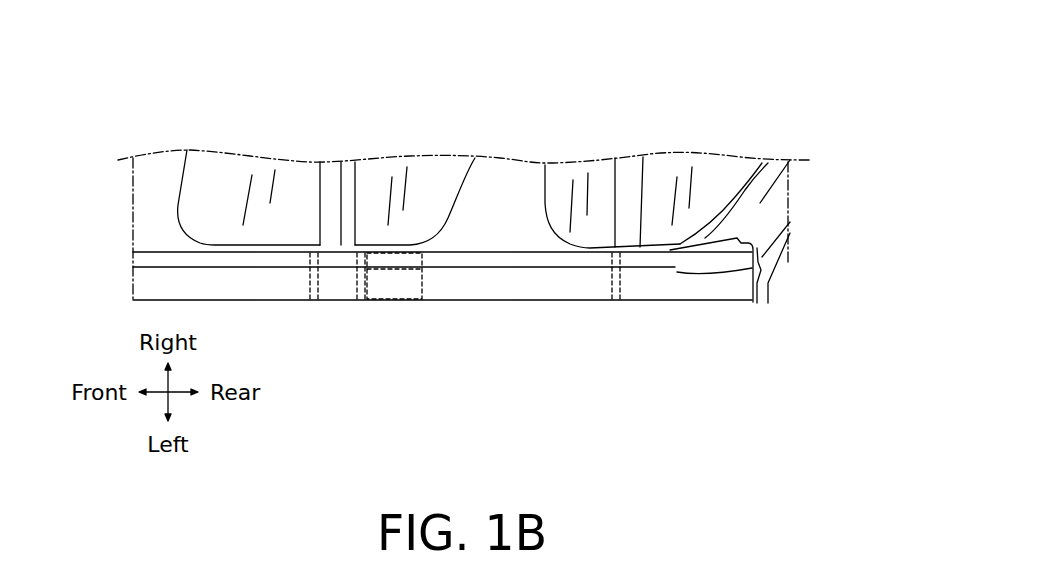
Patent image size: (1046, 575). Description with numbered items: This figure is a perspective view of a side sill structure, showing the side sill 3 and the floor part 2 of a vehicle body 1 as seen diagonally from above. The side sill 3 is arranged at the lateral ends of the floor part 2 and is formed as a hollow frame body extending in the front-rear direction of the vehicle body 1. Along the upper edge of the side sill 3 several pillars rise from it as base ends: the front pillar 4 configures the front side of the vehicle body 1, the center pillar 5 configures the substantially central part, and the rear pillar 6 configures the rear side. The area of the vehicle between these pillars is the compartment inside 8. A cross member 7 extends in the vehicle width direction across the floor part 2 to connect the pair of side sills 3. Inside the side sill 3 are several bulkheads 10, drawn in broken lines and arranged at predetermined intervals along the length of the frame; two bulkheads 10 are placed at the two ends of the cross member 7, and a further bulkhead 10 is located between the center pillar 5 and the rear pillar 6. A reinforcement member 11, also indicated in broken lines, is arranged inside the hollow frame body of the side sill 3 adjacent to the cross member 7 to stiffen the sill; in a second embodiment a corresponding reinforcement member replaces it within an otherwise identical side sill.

The vehicle body 1 is at (612, 97).
The floor part 2 is at (262, 167).
The side sill 3 is at (686, 303).
The front pillar 4 is at (158, 166).
The center pillar 5 is at (507, 178).
The rear pillar 6 is at (762, 187).
The cross member 7 is at (327, 188).
The compartment inside 8 is at (423, 168).
The bulkhead 10 is at (315, 305).
The reinforcement member 11 is at (392, 305).